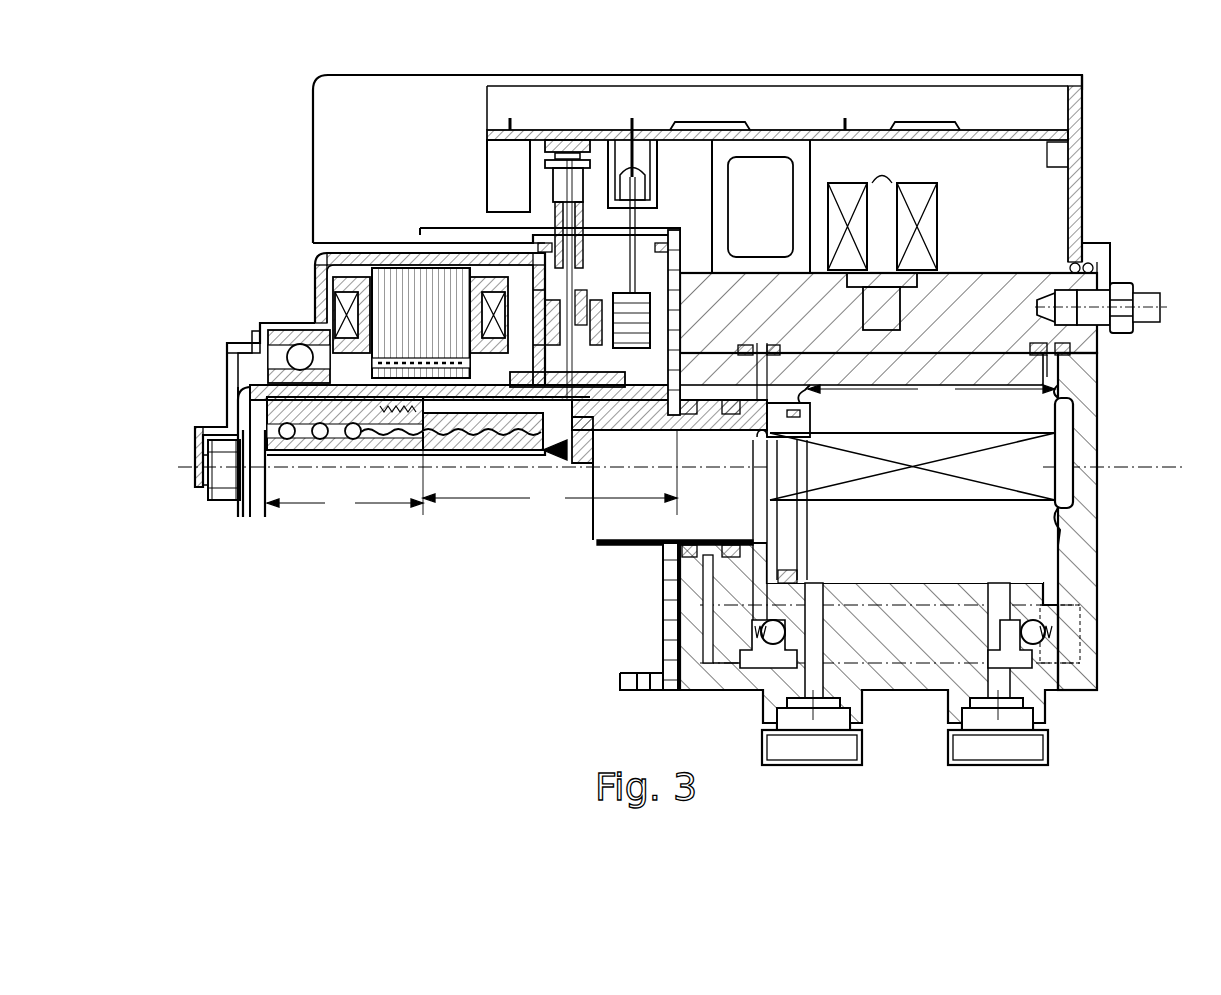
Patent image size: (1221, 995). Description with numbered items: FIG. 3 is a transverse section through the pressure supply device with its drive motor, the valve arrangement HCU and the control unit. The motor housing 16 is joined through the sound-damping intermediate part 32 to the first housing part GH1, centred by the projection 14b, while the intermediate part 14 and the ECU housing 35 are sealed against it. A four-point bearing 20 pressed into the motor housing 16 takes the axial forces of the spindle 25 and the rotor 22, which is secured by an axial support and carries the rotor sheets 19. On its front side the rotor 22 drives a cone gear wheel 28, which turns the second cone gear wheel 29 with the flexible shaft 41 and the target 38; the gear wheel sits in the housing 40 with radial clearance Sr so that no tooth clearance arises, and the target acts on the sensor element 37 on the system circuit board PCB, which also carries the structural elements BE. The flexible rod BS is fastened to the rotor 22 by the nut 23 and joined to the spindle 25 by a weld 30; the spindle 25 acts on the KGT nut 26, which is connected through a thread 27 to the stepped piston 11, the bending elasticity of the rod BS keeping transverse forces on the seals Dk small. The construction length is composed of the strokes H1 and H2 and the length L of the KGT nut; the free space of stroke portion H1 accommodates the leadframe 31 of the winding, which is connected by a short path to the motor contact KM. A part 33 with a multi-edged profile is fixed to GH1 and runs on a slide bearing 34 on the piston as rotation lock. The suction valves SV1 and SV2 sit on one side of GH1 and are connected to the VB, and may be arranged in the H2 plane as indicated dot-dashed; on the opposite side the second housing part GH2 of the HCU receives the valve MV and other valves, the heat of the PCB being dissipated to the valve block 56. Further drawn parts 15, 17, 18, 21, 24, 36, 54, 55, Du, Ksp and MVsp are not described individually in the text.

The piston 11 is at (520, 440).
The intermediate part 14 is at (665, 600).
The projection 14b is at (723, 449).
The bleeder screw 15 is at (1112, 292).
The motor housing 16 is at (395, 300).
The motor housing 17 is at (340, 258).
The stator coil 18 is at (335, 330).
The rotor sheets 19 is at (298, 345).
The four-point bearing 20 is at (272, 322).
The flange 21 is at (263, 368).
The rotor 22 is at (240, 380).
The nut 23 is at (218, 434).
The nut 24 is at (222, 495).
The spindle 25 is at (297, 455).
The KGT nut 26 is at (400, 448).
The thread 27 is at (417, 442).
The cone gear wheel 28 is at (485, 447).
The second cone gear wheel 29 is at (556, 450).
The weld 30 is at (592, 450).
The leadframe 31 is at (642, 348).
The intermediate part 32 is at (675, 682).
The rotation lock part 33 is at (1075, 468).
The slide bearing 34 is at (812, 428).
The ECU housing 35 is at (1086, 90).
The electronic module 36 is at (795, 150).
The sensor element 37 is at (567, 170).
The target 38 is at (568, 140).
The housing 40 is at (425, 232).
The shaft 41 is at (507, 173).
The hub flange 54 is at (600, 384).
The hub 55 is at (567, 317).
The valve block 56 is at (945, 282).
The structural elements BE is at (512, 125).
The flexible rod BS is at (300, 455).
The seals Dk is at (727, 542).
The cylinder bore Du is at (810, 565).
The first housing part GH1 is at (1100, 565).
The second housing part GH2 is at (724, 168).
The stroke portion H1 is at (550, 472).
The stroke portion H2 is at (931, 389).
The valve arrangement HCU is at (1120, 285).
The motor contact KM is at (632, 140).
The sensor pin Ksp is at (845, 120).
The KGT nut length L is at (345, 477).
The valve MV is at (919, 178).
The solenoid valve coil MVsp is at (913, 247).
The system circuit board PCB is at (757, 118).
The suction valve SV1 is at (1062, 620).
The suction valve SV2 is at (810, 640).
The radial clearance Sr is at (605, 365).
The element VB is at (948, 752).